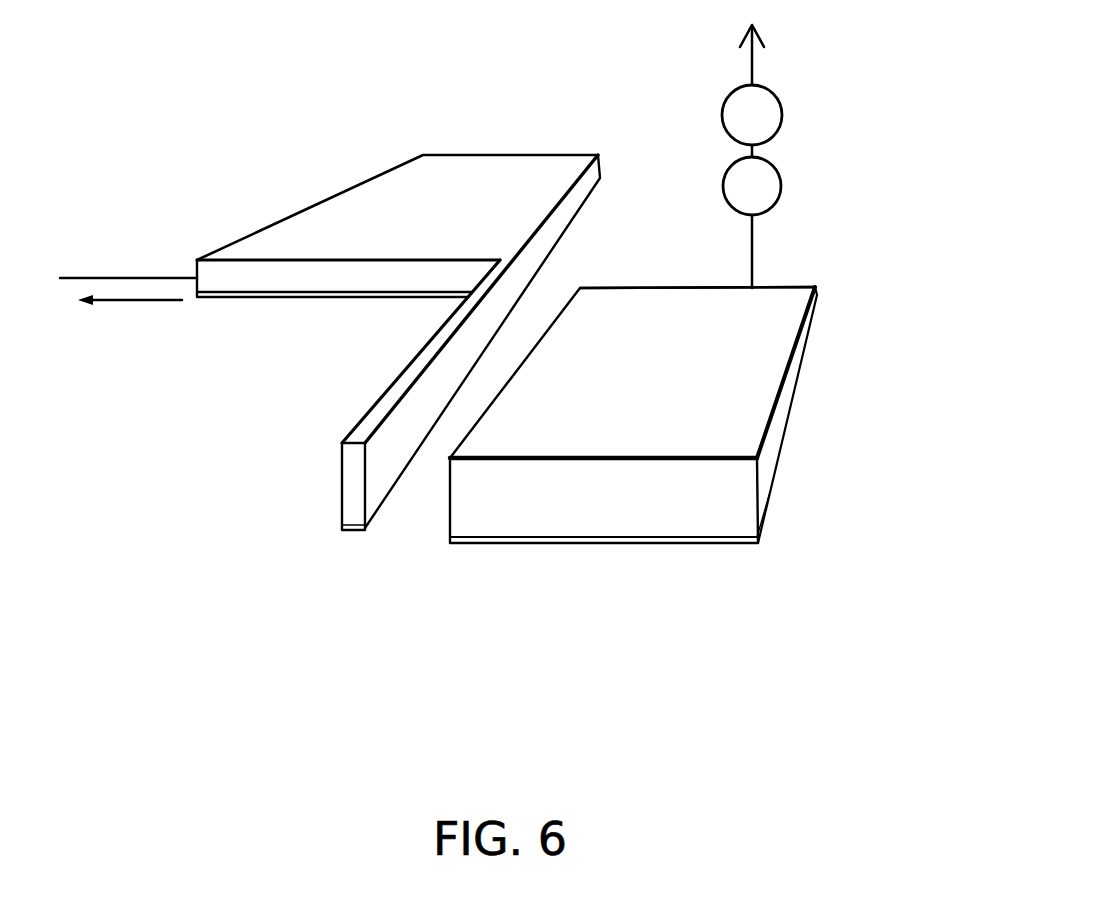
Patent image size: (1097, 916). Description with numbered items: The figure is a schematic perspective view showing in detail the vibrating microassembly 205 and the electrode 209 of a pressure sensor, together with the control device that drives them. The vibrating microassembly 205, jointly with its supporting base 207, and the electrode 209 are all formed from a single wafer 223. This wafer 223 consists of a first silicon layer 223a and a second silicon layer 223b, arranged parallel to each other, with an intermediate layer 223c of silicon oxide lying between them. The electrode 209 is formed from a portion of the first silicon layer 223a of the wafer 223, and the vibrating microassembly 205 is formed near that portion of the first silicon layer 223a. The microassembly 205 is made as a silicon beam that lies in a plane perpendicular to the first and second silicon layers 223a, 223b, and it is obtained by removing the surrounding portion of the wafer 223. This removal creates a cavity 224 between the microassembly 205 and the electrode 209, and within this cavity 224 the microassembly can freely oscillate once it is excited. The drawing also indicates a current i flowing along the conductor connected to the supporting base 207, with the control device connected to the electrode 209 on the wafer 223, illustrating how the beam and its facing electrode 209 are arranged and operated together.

The supporting base 207 is at (381, 225).
The wafer 223 is at (538, 182).
The first silicon layer 223a is at (582, 543).
The second silicon layer 223b is at (725, 377).
The intermediate layer 223c is at (710, 504).
The vibrating microassembly 205 is at (353, 492).
The cavity 224 is at (421, 506).
The electrode 209 is at (715, 555).
The current i is at (128, 303).